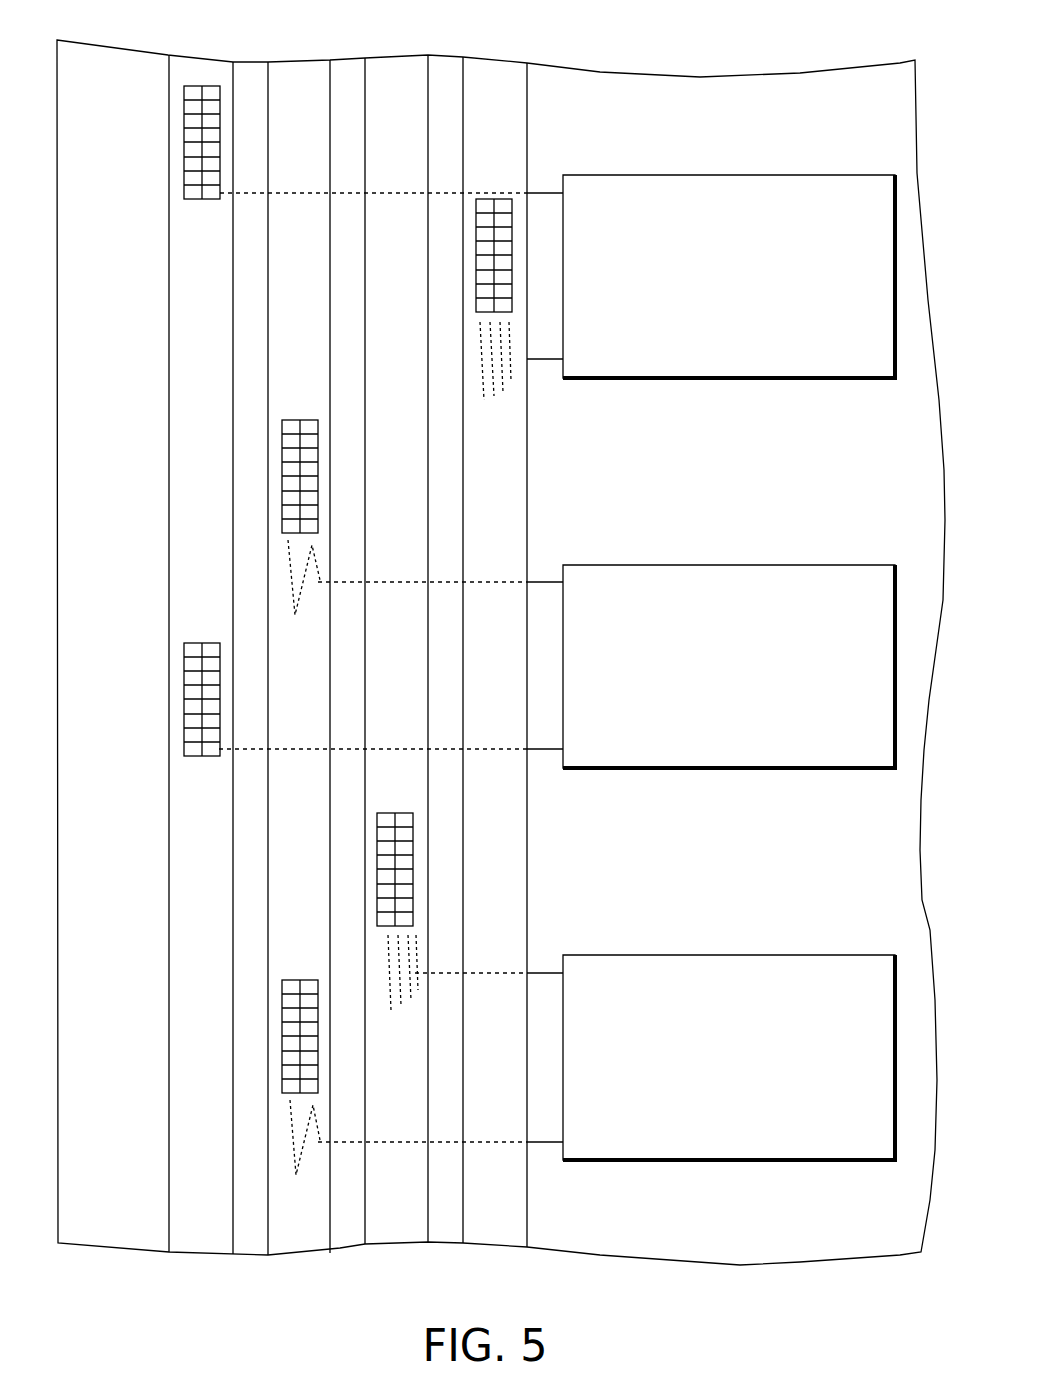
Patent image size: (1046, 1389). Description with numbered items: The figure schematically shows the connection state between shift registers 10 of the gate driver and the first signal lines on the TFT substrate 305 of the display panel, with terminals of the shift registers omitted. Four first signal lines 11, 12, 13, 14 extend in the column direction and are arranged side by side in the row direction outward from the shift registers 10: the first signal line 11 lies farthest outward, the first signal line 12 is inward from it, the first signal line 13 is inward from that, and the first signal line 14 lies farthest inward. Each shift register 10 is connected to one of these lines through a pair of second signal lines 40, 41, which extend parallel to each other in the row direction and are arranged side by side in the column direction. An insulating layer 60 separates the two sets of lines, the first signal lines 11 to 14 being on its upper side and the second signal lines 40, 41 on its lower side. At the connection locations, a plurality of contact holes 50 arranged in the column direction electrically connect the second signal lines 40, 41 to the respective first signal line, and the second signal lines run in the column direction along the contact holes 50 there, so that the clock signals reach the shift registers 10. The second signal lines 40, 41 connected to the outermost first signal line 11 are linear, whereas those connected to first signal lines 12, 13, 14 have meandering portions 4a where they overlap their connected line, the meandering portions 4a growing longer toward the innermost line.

The TFT substrate 305 is at (122, 68).
The first signal line 11 is at (200, 74).
The first signal line 12 is at (300, 72).
The first signal line 13 is at (395, 72).
The first signal line 14 is at (490, 72).
The shift register 10 is at (830, 175).
The second signal line 40 is at (540, 193).
The second signal line 41 is at (540, 359).
The contact hole 50 is at (184, 106).
The meandering portion 4a is at (497, 400).
The insulating layer 60 is at (250, 860).